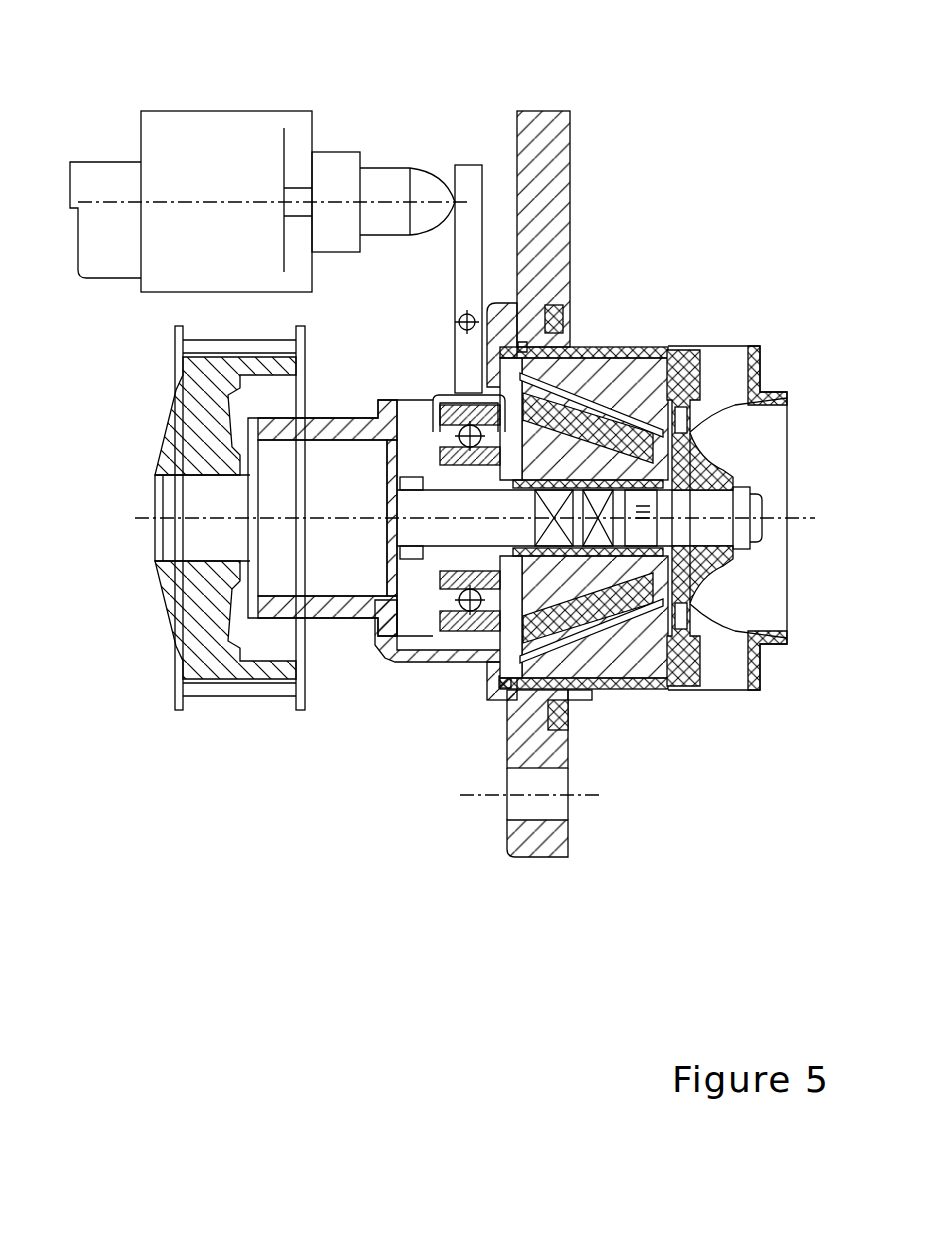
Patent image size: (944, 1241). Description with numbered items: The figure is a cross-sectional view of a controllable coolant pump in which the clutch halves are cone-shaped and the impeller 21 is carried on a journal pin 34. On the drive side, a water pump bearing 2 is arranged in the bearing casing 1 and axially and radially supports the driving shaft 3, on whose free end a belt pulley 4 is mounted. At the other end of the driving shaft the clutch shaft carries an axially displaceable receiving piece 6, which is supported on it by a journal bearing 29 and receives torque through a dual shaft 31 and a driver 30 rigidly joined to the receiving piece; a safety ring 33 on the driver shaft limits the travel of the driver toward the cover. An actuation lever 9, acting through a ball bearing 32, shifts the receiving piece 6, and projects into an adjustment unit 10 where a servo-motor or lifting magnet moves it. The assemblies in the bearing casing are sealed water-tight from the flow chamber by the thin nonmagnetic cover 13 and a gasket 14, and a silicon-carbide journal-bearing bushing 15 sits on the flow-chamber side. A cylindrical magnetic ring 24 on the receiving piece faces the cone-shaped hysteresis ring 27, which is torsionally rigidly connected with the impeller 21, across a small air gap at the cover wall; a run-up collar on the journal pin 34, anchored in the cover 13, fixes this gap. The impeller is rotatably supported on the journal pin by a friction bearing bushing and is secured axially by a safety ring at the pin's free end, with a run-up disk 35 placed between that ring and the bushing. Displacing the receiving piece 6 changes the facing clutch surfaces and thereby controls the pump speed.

The bearing casing 1 is at (330, 425).
The water pump bearing 2 is at (295, 478).
The driving shaft 3 is at (158, 478).
The belt pulley 4 is at (207, 395).
The receiving piece 6 is at (527, 597).
The actuation lever 9 is at (470, 178).
The adjustment unit 10 is at (153, 142).
The cover 13 is at (760, 377).
The gasket 14 is at (567, 720).
The journal-bearing bushing 15 is at (727, 563).
The impeller 21 is at (787, 398).
The magnetic ring 24 is at (655, 380).
The hysteresis ring 27 is at (597, 420).
The journal bearing 29 is at (445, 588).
The driver 30 is at (667, 607).
The dual shaft 31 is at (576, 485).
The ball bearing 32 is at (447, 395).
The safety ring 33 is at (760, 673).
The journal pin 34 is at (762, 503).
The run-up disk 35 is at (735, 483).